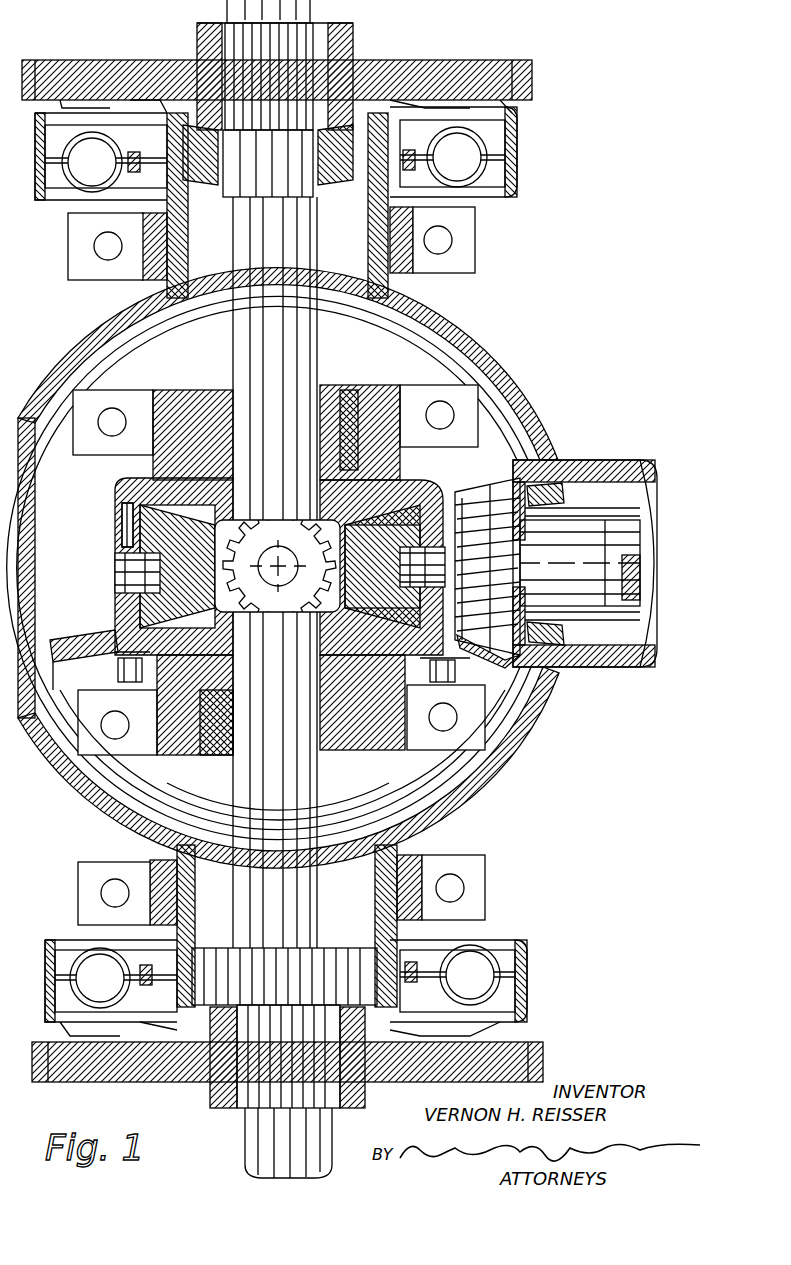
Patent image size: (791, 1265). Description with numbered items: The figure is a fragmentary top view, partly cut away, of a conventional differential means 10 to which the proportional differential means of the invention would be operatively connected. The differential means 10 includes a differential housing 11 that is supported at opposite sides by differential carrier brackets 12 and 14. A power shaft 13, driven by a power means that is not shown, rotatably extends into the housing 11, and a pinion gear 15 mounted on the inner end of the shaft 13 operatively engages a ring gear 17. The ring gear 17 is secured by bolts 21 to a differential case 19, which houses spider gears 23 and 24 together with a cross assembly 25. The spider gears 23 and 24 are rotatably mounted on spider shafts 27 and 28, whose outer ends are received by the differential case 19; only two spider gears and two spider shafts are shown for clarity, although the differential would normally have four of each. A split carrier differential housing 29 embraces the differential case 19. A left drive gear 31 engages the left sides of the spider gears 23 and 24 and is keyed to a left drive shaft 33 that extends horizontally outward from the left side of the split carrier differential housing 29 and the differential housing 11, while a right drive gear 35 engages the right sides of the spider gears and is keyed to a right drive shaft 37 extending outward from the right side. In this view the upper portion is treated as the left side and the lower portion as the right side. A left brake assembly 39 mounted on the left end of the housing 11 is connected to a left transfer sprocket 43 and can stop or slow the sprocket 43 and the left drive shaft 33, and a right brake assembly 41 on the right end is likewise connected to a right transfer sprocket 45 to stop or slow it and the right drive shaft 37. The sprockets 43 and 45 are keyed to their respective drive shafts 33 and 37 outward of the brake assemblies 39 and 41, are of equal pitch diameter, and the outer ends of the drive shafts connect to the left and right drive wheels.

The differential means 10 is at (534, 366).
The differential housing 11 is at (468, 340).
The differential carrier bracket 12 is at (465, 262).
The power shaft 13 is at (600, 585).
The differential carrier bracket 14 is at (488, 880).
The pinion gear 15 is at (478, 492).
The ring gear 17 is at (75, 640).
The differential case 19 is at (128, 470).
The bolts 21 is at (452, 672).
The spider gear 23 is at (440, 490).
The spider gear 24 is at (170, 530).
The cross assembly 25 is at (277, 566).
The spider shaft 27 is at (440, 548).
The spider shaft 28 is at (120, 563).
The split carrier differential housing 29 is at (134, 386).
The left drive gear 31 is at (360, 432).
The left drive shaft 33 is at (290, 314).
The right drive gear 35 is at (200, 668).
The right drive shaft 37 is at (305, 828).
The left brake assembly 39 is at (520, 156).
The right brake assembly 41 is at (530, 972).
The left transfer sprocket 43 is at (450, 62).
The right transfer sprocket 45 is at (90, 1082).